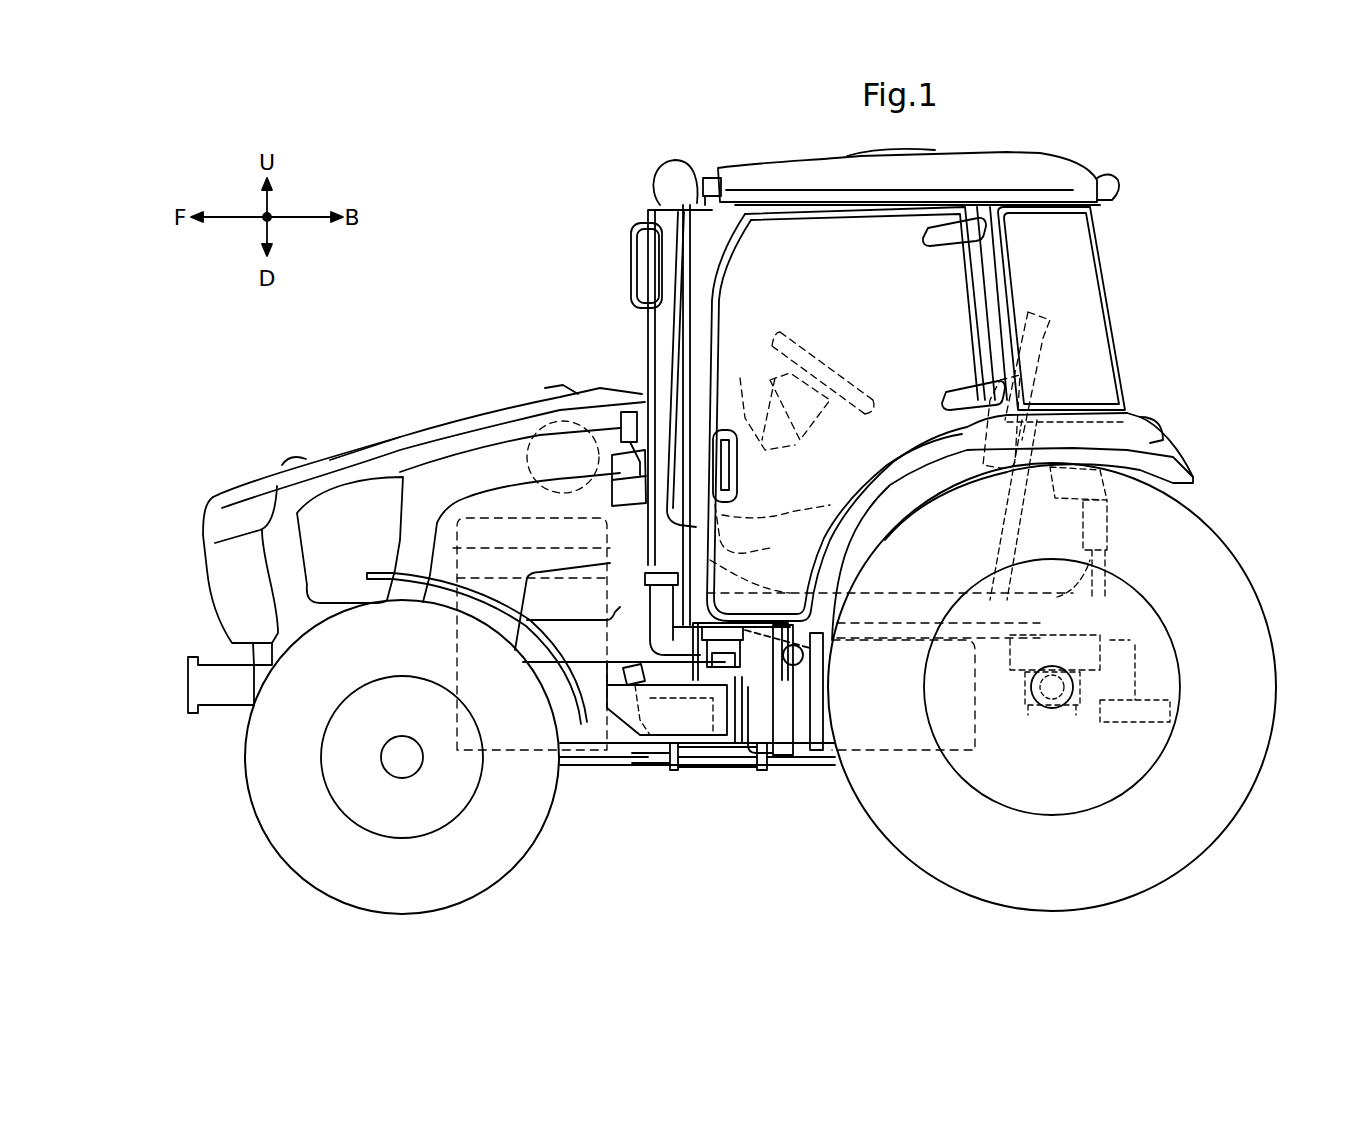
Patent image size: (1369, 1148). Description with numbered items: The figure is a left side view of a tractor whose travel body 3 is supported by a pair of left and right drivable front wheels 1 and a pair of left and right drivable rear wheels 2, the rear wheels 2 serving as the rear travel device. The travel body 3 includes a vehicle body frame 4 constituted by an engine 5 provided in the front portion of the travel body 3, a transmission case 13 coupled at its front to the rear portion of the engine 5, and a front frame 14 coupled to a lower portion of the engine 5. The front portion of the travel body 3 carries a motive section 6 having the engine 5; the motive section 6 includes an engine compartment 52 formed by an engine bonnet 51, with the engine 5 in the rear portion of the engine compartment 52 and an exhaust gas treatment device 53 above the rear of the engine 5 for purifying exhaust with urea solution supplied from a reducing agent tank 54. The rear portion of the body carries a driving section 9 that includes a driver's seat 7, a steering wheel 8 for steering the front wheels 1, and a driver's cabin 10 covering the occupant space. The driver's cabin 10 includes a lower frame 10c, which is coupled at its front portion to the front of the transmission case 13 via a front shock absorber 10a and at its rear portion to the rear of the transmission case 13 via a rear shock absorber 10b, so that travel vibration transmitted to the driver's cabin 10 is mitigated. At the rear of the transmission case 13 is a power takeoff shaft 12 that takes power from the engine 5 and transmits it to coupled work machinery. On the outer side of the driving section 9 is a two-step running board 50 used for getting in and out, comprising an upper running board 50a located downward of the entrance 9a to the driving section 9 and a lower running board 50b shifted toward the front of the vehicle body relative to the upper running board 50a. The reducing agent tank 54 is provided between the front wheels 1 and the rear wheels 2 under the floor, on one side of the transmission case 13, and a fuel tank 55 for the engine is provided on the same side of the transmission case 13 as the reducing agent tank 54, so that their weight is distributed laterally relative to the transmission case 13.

The front wheels 1 is at (292, 870).
The rear wheels 2 is at (1212, 853).
The travel body 3 is at (780, 766).
The vehicle body frame 4 is at (178, 686).
The engine 5 is at (487, 518).
The motive section 6 is at (388, 421).
The driver's seat 7 is at (1040, 305).
The steering wheel 8 is at (815, 345).
The driving section 9 is at (818, 240).
The entrance 9a is at (795, 572).
The driver's cabin 10 is at (1015, 152).
The front shock absorber 10a is at (765, 643).
The rear shock absorber 10b is at (1130, 535).
The lower frame 10c is at (845, 510).
The power takeoff shaft 12 is at (1150, 705).
The transmission case 13 is at (905, 760).
The front frame 14 is at (262, 663).
The two-step running board 50 is at (699, 772).
The upper running board 50a is at (738, 760).
The lower running board 50b is at (705, 772).
The engine bonnet 51 is at (415, 444).
The engine compartment 52 is at (330, 448).
The exhaust gas treatment device 53 is at (570, 420).
The reducing agent tank 54 is at (648, 752).
The fuel tank 55 is at (797, 738).